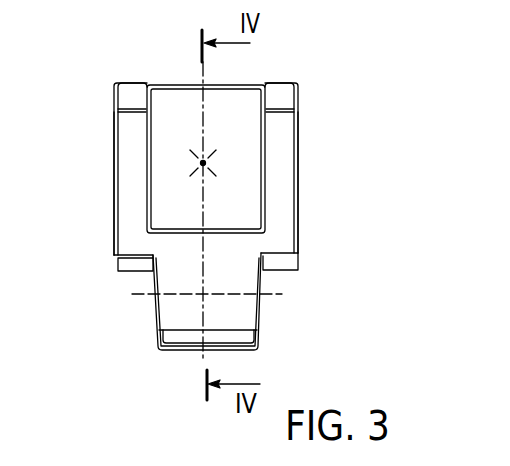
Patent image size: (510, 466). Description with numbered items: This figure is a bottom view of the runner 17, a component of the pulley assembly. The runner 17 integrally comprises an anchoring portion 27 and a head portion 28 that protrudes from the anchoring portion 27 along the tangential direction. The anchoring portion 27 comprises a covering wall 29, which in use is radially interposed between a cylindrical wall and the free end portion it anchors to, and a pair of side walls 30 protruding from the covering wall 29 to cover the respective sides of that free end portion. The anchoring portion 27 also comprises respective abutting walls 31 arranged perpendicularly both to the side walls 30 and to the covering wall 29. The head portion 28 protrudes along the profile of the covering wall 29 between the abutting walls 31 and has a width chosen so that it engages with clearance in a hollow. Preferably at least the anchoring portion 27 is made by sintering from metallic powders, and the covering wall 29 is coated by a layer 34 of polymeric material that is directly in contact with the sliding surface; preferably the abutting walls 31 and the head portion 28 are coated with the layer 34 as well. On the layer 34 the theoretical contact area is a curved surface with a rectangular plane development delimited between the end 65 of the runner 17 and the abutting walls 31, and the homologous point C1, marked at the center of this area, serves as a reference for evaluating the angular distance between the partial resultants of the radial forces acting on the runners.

The runner 17 is at (281, 83).
The anchoring portion 27 is at (114, 148).
The head portion 28 is at (176, 330).
The covering wall 29 is at (173, 85).
The side walls 30 is at (130, 200).
The abutting walls 31 is at (128, 250).
The layer of polymeric material 34 is at (295, 272).
The end of runner 65 is at (118, 102).
The homologous point C1 is at (207, 162).